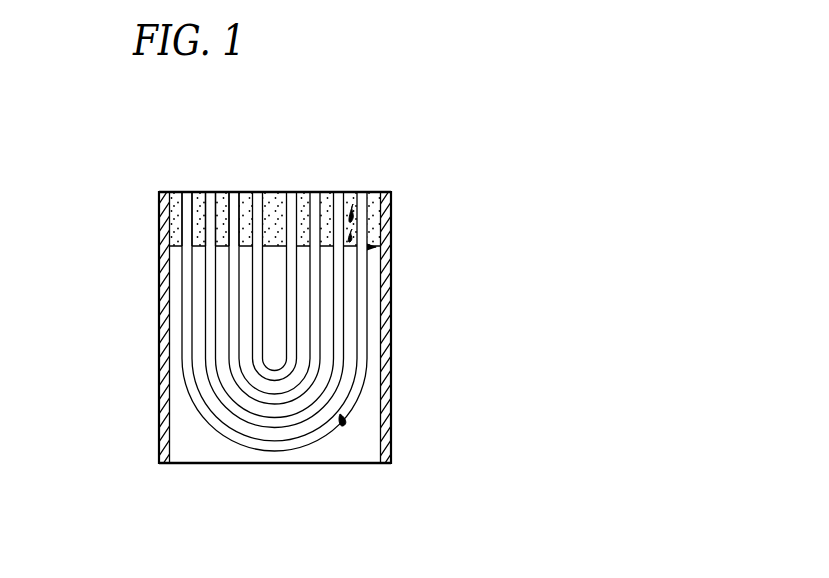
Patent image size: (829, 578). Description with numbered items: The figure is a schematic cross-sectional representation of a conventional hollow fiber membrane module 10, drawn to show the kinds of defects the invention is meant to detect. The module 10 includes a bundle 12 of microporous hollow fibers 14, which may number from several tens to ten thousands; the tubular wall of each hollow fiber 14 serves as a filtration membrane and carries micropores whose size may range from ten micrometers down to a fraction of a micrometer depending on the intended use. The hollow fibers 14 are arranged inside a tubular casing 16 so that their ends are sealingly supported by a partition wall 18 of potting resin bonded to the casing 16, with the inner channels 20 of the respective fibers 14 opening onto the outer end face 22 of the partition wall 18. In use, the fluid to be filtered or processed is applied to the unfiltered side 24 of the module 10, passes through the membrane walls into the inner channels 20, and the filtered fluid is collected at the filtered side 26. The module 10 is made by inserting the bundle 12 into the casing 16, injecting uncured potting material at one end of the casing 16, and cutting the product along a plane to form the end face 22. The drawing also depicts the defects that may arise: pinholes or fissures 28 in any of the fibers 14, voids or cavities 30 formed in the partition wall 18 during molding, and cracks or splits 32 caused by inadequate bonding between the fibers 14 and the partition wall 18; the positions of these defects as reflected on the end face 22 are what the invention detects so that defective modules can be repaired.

The hollow fiber membrane module 10 is at (427, 309).
The bundle 12 is at (192, 432).
The hollow fibers 14 is at (290, 408).
The tubular casing 16 is at (392, 420).
The partition wall 18 is at (176, 217).
The inner channels 20 is at (236, 192).
The outer end face 22 is at (175, 192).
The unfiltered side 24 is at (305, 475).
The filtered side 26 is at (298, 180).
The pinholes or fissures 28 is at (346, 422).
The voids or cavities 30 is at (355, 237).
The cracks or splits 32 is at (268, 245).